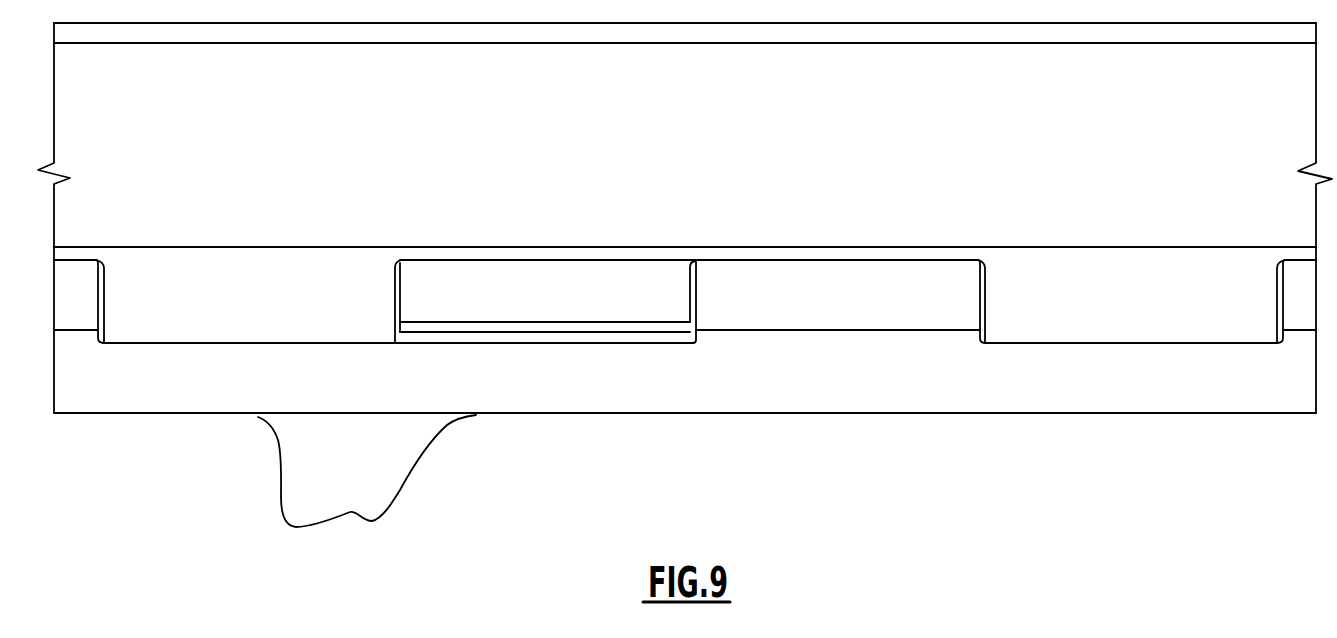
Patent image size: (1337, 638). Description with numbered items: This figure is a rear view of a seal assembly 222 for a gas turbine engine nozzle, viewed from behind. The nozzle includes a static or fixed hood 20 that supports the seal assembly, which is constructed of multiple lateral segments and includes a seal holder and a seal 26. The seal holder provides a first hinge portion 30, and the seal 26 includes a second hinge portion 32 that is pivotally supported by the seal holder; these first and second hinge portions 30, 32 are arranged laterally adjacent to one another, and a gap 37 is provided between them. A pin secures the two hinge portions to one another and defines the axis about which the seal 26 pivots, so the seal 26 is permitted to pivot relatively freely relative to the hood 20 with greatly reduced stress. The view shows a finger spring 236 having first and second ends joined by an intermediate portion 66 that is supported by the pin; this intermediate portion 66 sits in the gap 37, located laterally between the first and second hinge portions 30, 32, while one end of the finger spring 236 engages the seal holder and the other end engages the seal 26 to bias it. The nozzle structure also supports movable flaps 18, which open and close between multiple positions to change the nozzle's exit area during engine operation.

The hood 20 is at (838, 147).
The seal 26 is at (521, 400).
The first hinge portion 30 is at (218, 330).
The second hinge portion 32 is at (845, 283).
The gap 37 is at (660, 275).
The intermediate portion 66 is at (540, 287).
The finger spring 236 is at (614, 334).
The movable flaps 18 is at (368, 481).
The assembly 222 is at (818, 452).